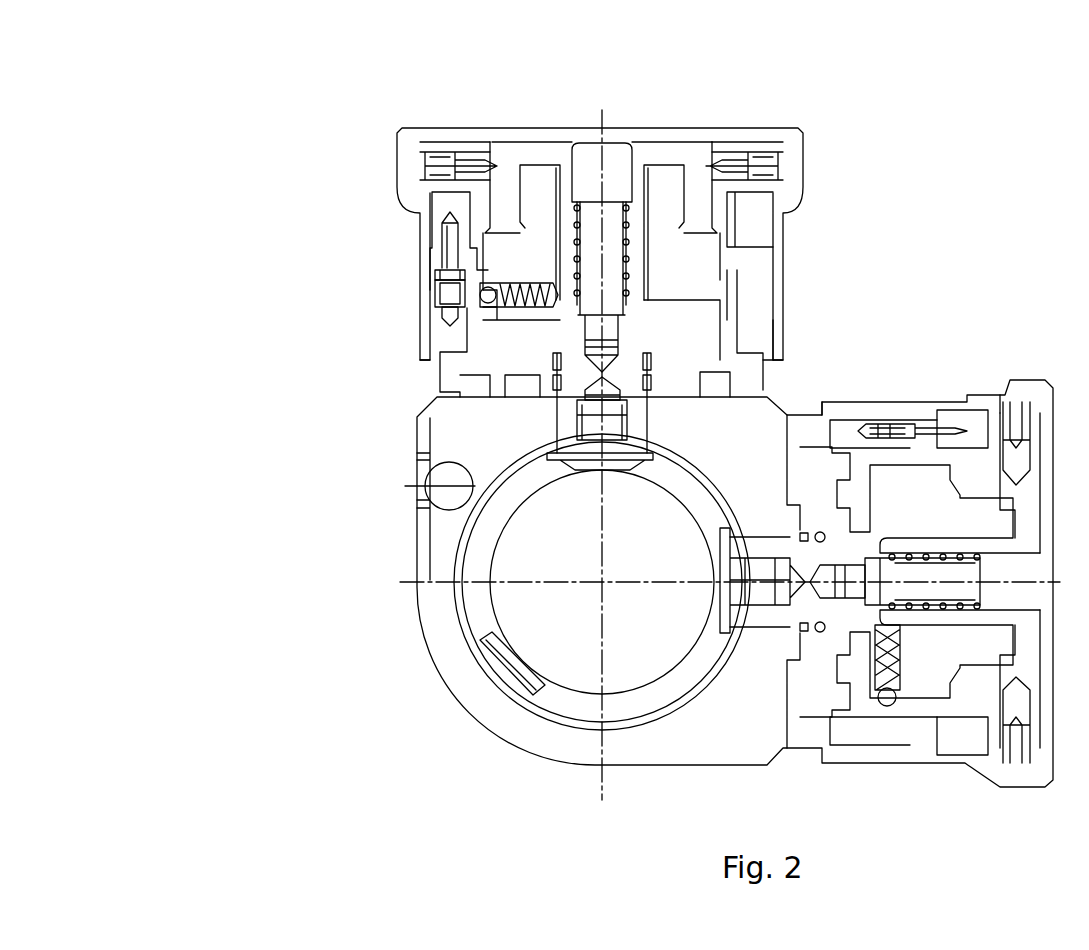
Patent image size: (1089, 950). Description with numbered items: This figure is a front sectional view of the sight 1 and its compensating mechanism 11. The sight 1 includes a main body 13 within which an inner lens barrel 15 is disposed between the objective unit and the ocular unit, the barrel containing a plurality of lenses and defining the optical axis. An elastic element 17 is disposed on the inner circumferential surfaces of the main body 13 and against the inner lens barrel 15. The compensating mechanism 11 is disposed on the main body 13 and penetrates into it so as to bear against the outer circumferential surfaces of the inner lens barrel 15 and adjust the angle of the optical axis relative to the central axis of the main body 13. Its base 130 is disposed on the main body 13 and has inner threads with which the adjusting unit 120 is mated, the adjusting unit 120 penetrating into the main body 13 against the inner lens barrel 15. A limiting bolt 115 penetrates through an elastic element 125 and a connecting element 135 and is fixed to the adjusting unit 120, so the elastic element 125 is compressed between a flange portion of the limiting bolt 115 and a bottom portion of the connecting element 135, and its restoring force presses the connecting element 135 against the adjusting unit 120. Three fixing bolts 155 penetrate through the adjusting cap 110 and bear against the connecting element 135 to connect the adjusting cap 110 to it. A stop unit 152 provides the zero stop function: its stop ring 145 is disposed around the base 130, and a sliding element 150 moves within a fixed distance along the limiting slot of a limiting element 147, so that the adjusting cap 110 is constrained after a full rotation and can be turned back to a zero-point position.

The sight 1 is at (149, 47).
The compensating mechanism 11 is at (372, 107).
The main body 13 is at (430, 422).
The inner lens barrel 15 is at (587, 693).
The elastic element 17 is at (485, 650).
The adjusting cap 110 is at (760, 142).
The limiting bolt 115 is at (581, 167).
The adjusting unit 120 is at (633, 340).
The elastic element 125 is at (634, 180).
The base 130 is at (747, 377).
The connecting element 135 is at (683, 153).
The stop ring 145 is at (450, 335).
The limiting element 147 is at (450, 277).
The sliding element 150 is at (450, 300).
The stop unit 152 is at (258, 240).
The fixing bolts 155 is at (440, 165).